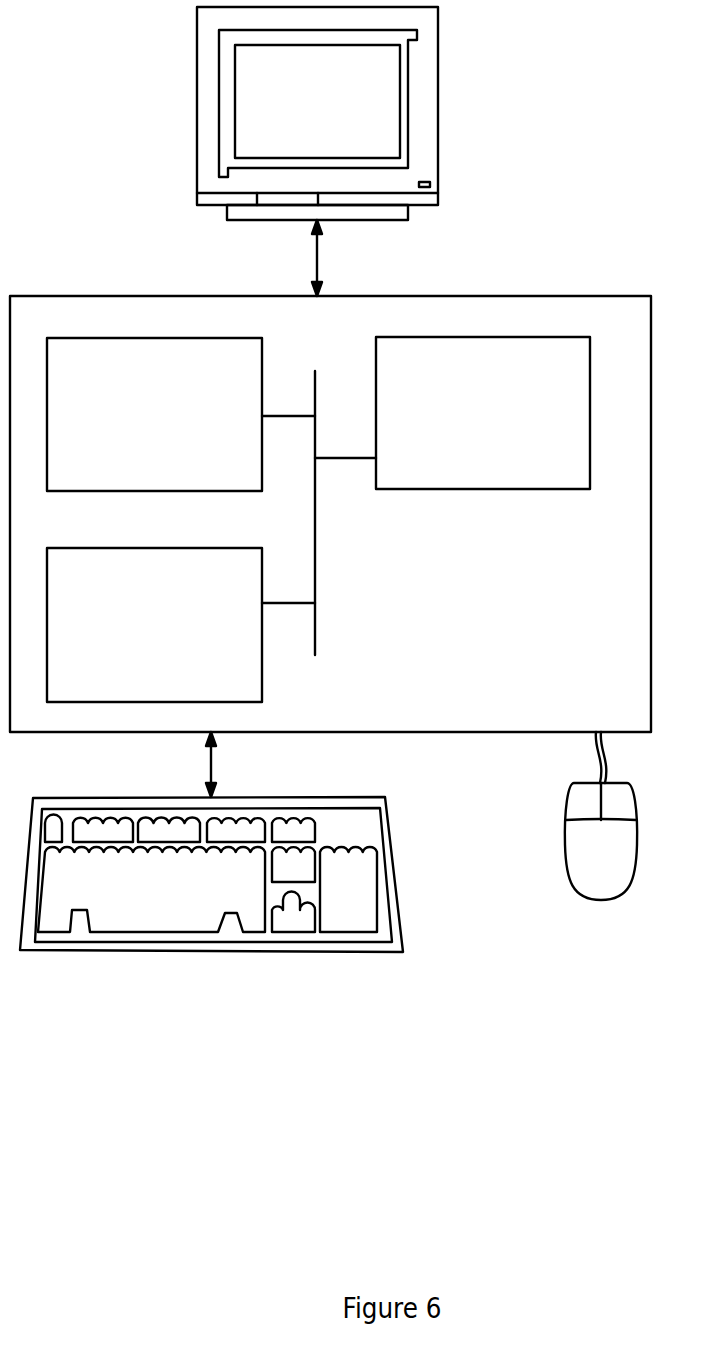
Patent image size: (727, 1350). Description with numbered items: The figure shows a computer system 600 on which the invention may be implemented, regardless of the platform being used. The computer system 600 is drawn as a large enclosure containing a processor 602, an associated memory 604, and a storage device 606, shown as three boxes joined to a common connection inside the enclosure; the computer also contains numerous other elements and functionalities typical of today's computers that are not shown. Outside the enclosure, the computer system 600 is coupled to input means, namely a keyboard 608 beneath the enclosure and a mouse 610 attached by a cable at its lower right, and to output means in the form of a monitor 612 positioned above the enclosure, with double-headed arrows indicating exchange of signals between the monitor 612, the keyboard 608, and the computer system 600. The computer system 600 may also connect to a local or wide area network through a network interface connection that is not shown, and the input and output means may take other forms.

The computer system 600 is at (632, 166).
The processor 602 is at (479, 425).
The memory 604 is at (134, 425).
The storage device 606 is at (131, 635).
The keyboard 608 is at (127, 912).
The mouse 610 is at (582, 858).
The monitor 612 is at (297, 118).